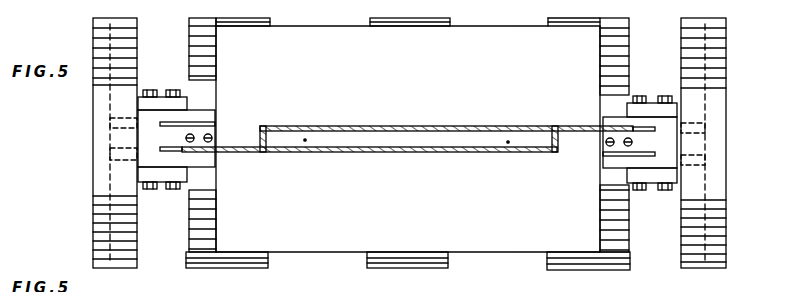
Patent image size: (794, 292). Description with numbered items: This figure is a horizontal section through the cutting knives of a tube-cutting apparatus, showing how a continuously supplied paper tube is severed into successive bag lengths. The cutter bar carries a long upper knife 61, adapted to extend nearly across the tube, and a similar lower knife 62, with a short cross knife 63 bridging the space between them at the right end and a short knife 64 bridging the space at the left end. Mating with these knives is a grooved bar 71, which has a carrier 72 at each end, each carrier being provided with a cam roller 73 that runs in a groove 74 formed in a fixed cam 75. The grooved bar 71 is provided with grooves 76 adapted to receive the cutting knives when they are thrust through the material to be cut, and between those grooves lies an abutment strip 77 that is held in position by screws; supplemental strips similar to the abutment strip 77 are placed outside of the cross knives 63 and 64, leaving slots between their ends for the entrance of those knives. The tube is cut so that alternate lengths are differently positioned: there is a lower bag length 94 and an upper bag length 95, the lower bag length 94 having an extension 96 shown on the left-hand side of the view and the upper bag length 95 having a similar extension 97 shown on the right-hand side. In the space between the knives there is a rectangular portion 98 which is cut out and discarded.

The long upper knife 61 is at (328, 125).
The lower knife 62 is at (380, 153).
The short cross knife 63 is at (552, 137).
The short knife 64 is at (268, 138).
The grooved bar 71 is at (152, 150).
The carrier 72 is at (152, 95).
The cam roller 73 is at (110, 150).
The groove 74 is at (115, 183).
The fixed cam 75 is at (100, 106).
The grooves 76 is at (180, 124).
The abutment strip 77 is at (180, 138).
The lower bag length 94 is at (495, 247).
The upper bag length 95 is at (480, 37).
The extension 96 is at (226, 132).
The extension 97 is at (590, 150).
The rectangular portion 98 is at (407, 137).